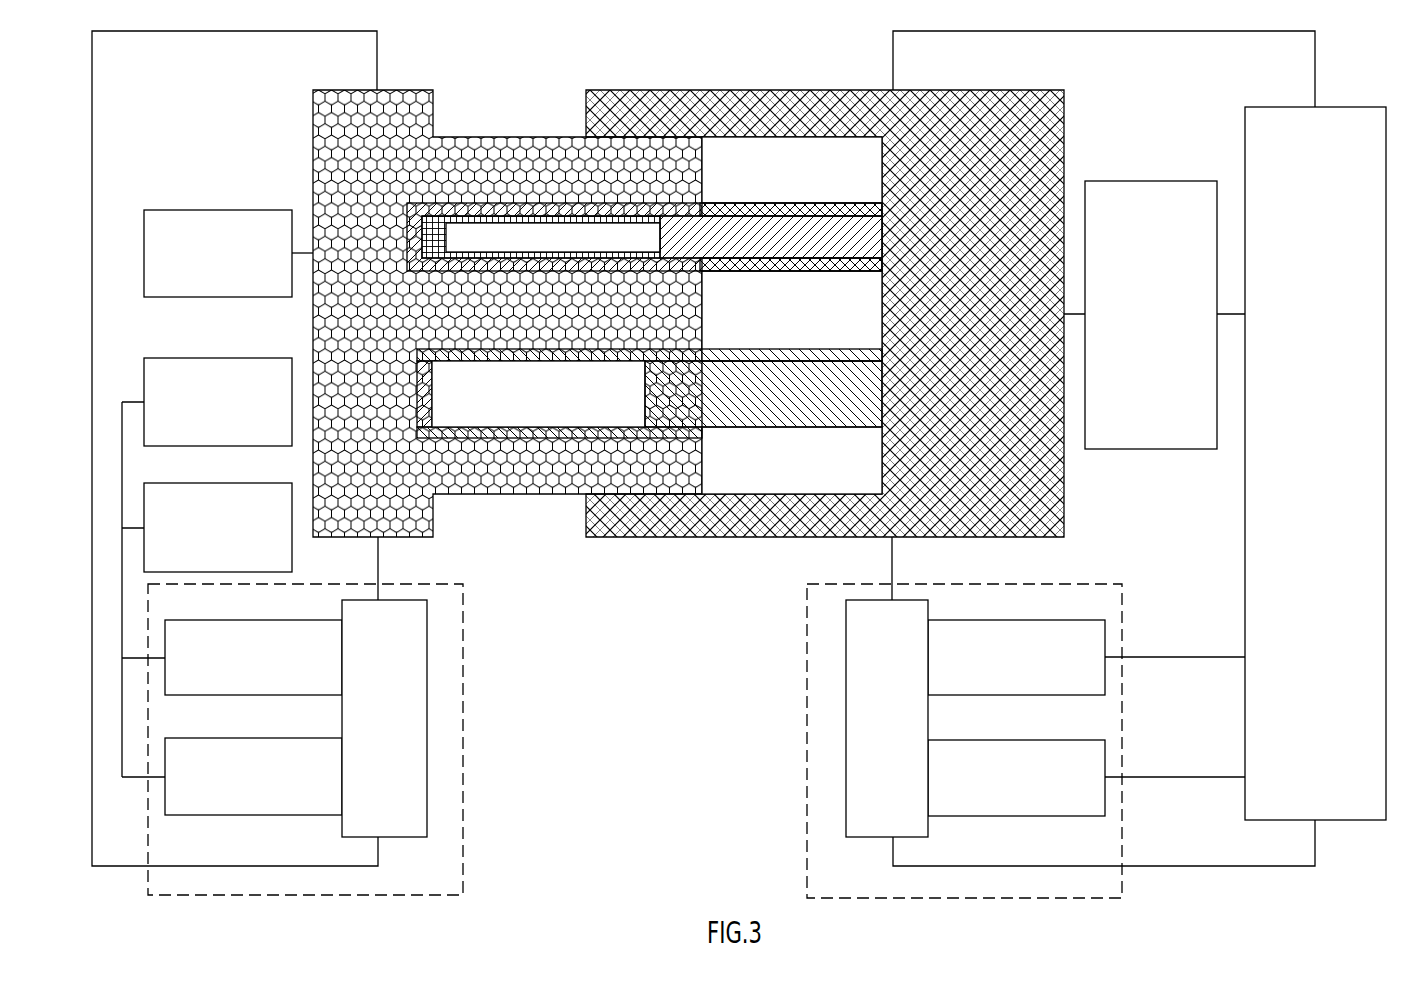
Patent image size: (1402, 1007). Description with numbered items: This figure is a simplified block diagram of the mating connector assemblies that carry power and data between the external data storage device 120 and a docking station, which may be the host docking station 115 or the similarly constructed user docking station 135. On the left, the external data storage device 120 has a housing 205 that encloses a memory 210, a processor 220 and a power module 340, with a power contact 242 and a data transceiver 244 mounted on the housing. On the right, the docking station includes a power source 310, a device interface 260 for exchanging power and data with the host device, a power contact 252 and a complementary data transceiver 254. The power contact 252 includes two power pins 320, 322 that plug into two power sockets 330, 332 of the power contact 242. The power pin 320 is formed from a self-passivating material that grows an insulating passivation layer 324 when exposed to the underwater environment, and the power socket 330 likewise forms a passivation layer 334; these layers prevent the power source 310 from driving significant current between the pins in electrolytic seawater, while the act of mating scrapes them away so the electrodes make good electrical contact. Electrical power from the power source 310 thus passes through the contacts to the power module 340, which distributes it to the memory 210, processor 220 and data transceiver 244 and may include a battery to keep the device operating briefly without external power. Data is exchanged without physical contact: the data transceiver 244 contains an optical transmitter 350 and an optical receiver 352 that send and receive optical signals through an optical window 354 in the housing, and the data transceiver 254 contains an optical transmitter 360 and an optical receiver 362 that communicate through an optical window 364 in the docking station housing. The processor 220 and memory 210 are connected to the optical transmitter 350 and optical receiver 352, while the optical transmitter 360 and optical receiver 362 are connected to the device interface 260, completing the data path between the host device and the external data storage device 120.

The housing 205 is at (378, 73).
The power contact 242 is at (426, 78).
The power contact 252 is at (777, 77).
The power socket 330 is at (482, 204).
The passivation layer 334 is at (518, 216).
The passivation layer 324 is at (770, 203).
The power pin 320 is at (855, 203).
The power pin 322 is at (803, 361).
The power socket 332 is at (520, 420).
The power module 340 is at (210, 210).
The processor 220 is at (225, 358).
The memory 210 is at (241, 483).
The optical transmitter 350 is at (268, 620).
The optical receiver 352 is at (268, 738).
The optical window 354 is at (405, 837).
The data transceiver 244 is at (463, 715).
The external data storage device 120 is at (332, 767).
The power source 310 is at (1152, 181).
The optical receiver 362 is at (1041, 620).
The optical transmitter 360 is at (1041, 740).
The optical window 364 is at (875, 837).
The data transceiver 254 is at (807, 677).
The device interface 260 is at (1350, 820).
The host docking station 115 is at (1104, 471).
The user docking station 135 is at (1215, 870).